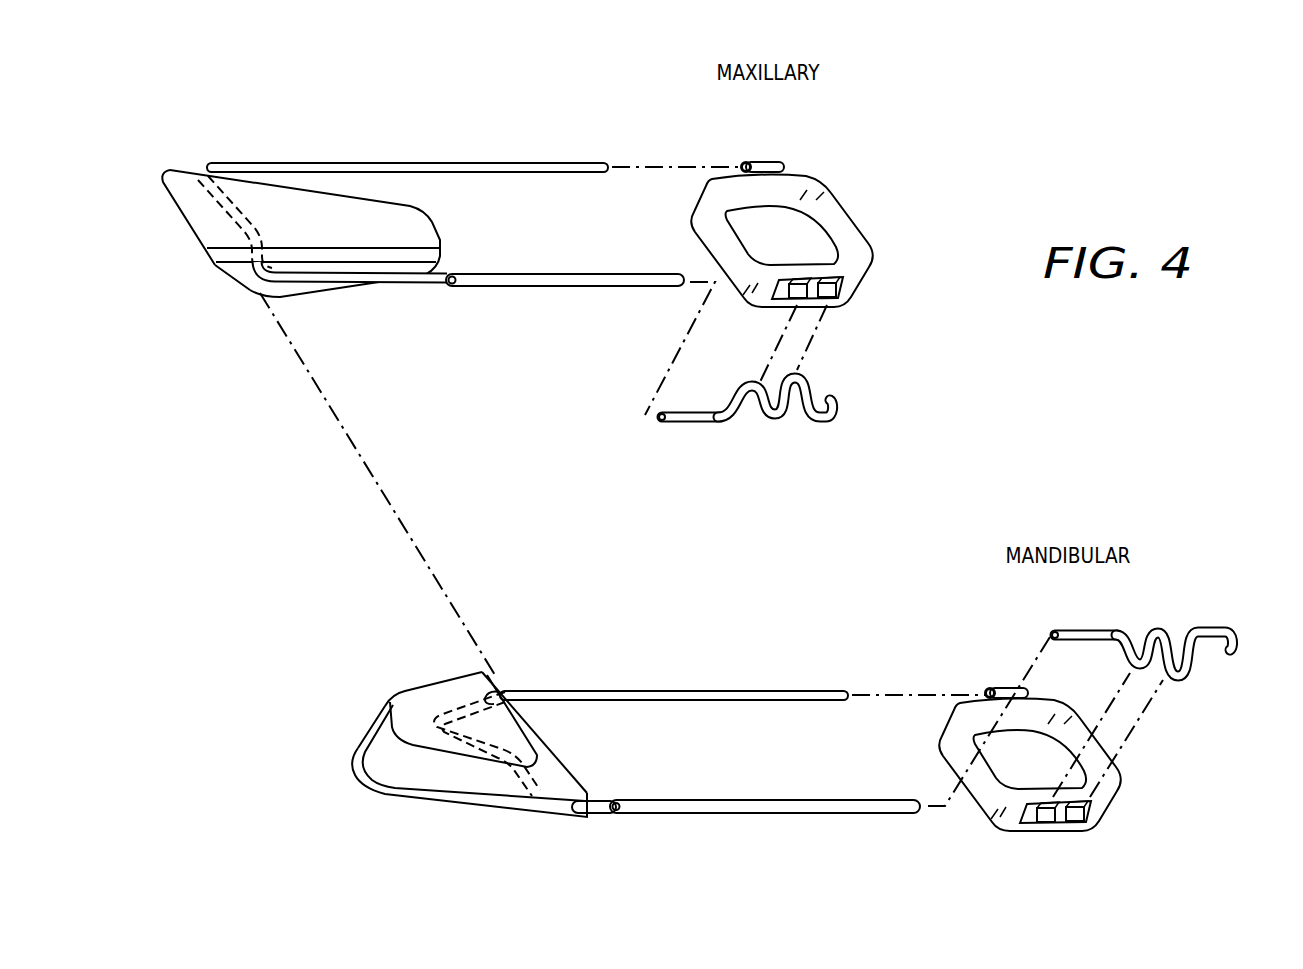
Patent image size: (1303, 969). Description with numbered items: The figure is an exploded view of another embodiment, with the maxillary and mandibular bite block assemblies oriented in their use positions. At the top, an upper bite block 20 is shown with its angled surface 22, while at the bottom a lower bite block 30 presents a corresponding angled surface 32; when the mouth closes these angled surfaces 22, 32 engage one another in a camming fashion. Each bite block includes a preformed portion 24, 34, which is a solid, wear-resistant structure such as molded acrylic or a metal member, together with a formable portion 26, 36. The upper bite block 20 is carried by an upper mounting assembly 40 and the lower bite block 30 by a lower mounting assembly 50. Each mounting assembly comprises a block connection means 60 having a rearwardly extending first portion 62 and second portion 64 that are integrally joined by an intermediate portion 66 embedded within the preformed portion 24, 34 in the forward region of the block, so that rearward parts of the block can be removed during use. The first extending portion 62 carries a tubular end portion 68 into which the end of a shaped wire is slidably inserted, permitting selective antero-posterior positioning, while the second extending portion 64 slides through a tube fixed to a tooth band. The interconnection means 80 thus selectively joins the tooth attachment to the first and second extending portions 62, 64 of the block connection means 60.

The upper bite block 20 is at (314, 252).
The angled surface 22 is at (244, 280).
The preformed portion 24 is at (305, 292).
The formable portion 26 is at (445, 252).
The lower bite block 30 is at (466, 765).
The angled surface 32 is at (508, 680).
The preformed portion 34 is at (374, 735).
The formable portion 36 is at (369, 780).
The upper mounting assembly 40 is at (764, 297).
The lower mounting assembly 50 is at (1056, 728).
The block connection means 60 is at (559, 486).
The first extending portion 62 is at (493, 295).
The second extending portion 64 is at (568, 162).
The intermediate portion 66 is at (253, 212).
The tubular end portion 68 is at (601, 272).
The interconnection means 80 is at (1070, 728).